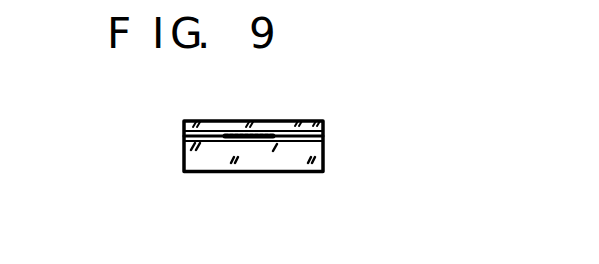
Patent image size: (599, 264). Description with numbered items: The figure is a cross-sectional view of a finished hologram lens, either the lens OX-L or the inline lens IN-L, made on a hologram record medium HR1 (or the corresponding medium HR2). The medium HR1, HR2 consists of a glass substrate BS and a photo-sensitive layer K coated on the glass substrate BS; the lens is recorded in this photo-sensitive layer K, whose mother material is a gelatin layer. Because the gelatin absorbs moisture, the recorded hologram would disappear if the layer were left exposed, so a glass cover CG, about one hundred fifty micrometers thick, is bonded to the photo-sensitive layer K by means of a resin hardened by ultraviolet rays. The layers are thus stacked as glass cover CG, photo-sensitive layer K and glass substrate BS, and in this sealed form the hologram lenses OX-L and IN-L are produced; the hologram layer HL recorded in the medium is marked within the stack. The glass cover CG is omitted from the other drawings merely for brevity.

The hologram lens OX-L is at (178, 148).
The inline hologram lens IN-L is at (116, 192).
The hologram record medium HR1 is at (368, 155).
The hologram record medium HR2 is at (510, 144).
The glass cover CG is at (324, 126).
The photo-sensitive layer K is at (323, 136).
The hologram layer HL is at (251, 140).
The glass substrate BS is at (287, 178).